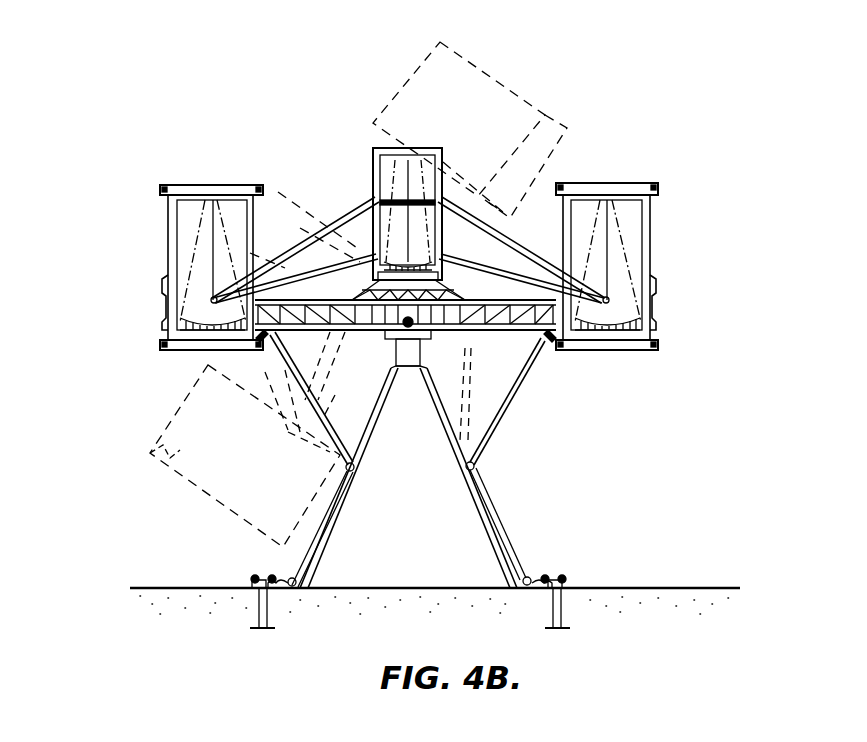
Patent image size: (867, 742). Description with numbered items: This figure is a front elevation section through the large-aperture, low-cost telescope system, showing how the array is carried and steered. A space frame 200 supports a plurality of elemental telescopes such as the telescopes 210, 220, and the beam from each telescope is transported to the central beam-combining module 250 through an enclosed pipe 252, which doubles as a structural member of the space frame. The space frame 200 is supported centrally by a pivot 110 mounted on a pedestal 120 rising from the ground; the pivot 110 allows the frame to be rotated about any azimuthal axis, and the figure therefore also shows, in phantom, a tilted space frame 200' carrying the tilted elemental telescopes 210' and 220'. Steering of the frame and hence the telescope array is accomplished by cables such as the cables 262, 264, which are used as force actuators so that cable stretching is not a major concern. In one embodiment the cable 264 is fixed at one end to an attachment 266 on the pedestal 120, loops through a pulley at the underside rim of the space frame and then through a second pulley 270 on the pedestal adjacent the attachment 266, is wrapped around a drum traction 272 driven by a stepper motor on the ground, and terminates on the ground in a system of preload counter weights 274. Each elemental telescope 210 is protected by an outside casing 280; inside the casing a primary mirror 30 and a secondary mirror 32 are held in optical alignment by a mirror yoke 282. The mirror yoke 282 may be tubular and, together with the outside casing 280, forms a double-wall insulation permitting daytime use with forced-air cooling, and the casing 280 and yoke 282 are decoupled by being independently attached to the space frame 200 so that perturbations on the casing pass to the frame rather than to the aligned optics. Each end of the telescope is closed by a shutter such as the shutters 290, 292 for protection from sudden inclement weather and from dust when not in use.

The tilted elemental telescope 210' is at (459, 118).
The tilted space frame 200' is at (434, 176).
The tilted elemental telescope 220' is at (235, 439).
The beam-combining module 250 is at (371, 160).
The enclosed pipe 252 is at (345, 202).
The shutter 290 is at (599, 185).
The secondary mirror 32 is at (612, 190).
The mirror yoke 282 is at (645, 185).
The outside casing 280 is at (660, 205).
The elemental telescope 210 is at (657, 267).
The elemental telescope 220 is at (175, 267).
The primary mirror 30 is at (637, 322).
The attachment 266 is at (546, 337).
The shutter 292 is at (638, 351).
The cable 262 is at (272, 357).
The pivot 110 is at (397, 342).
The space frame 200 is at (411, 444).
The cable 264 is at (487, 433).
The second pulley 270 is at (475, 468).
The drum traction 272 is at (527, 575).
The pedestal 120 is at (450, 557).
The preload counter weights 274 is at (573, 612).